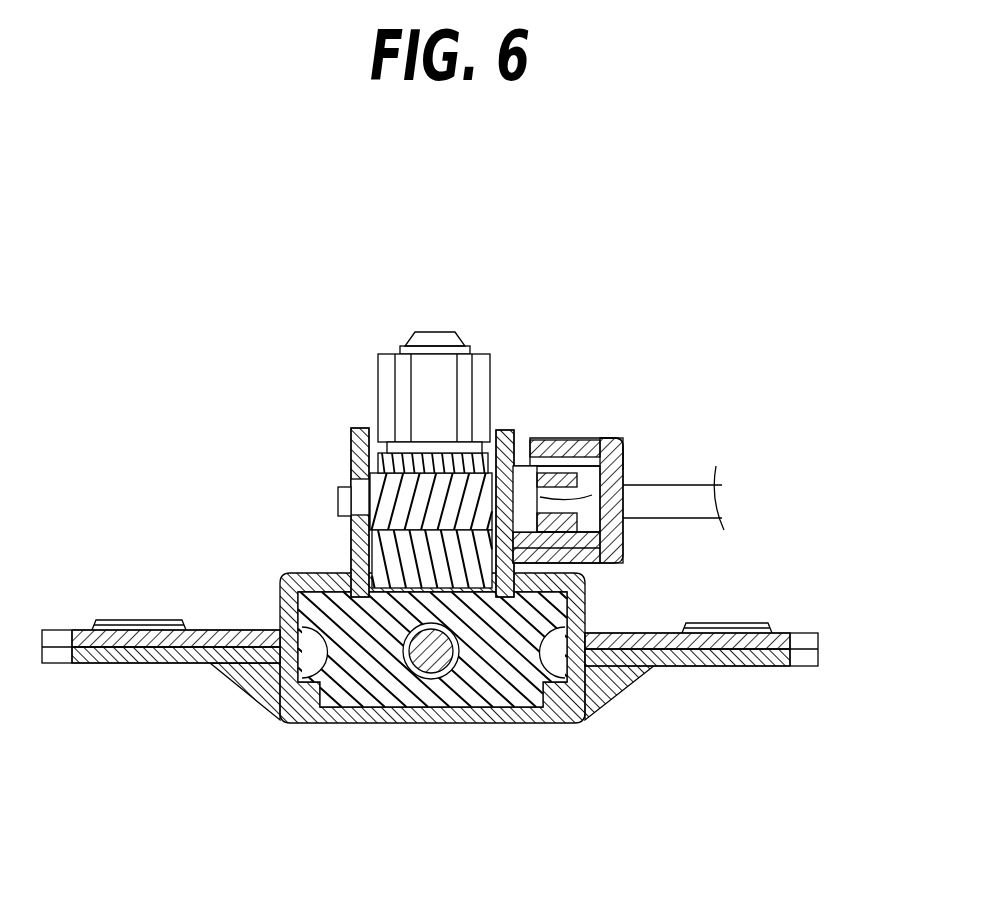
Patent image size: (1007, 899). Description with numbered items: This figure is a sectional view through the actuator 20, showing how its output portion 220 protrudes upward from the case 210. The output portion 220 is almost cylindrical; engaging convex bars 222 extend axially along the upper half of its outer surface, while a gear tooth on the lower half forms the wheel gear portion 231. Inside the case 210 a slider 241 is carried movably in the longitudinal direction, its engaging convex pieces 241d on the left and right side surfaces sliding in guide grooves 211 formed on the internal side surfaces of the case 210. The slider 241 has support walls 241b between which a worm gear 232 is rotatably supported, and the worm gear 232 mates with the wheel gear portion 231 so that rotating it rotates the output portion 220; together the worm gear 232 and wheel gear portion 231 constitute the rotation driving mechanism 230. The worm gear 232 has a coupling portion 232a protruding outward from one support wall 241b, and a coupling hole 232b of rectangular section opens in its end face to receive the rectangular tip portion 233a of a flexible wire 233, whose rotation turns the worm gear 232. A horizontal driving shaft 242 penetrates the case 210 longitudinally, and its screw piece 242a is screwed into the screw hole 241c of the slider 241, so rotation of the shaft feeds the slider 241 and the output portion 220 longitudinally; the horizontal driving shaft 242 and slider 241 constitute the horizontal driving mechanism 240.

The actuator 20 is at (248, 355).
The case 210 is at (395, 722).
The guide groove 211 is at (282, 718).
The output portion 220 is at (432, 372).
The engaging convex bar 222 is at (384, 386).
The rotation driving mechanism 230 is at (633, 227).
The wheel gear portion 231 is at (428, 456).
The worm gear 232 is at (513, 497).
The coupling portion 232a is at (612, 530).
The coupling hole 232b is at (614, 465).
The flexible wire 233 is at (683, 497).
The tip portion 233a is at (623, 522).
The horizontal driving mechanism 240 is at (683, 822).
The slider 241 is at (530, 725).
The support wall 241b is at (351, 452).
The screw hole 241c is at (363, 713).
The engaging convex piece 241d is at (282, 677).
The horizontal driving shaft 242 is at (473, 722).
The screw piece 242a is at (438, 690).